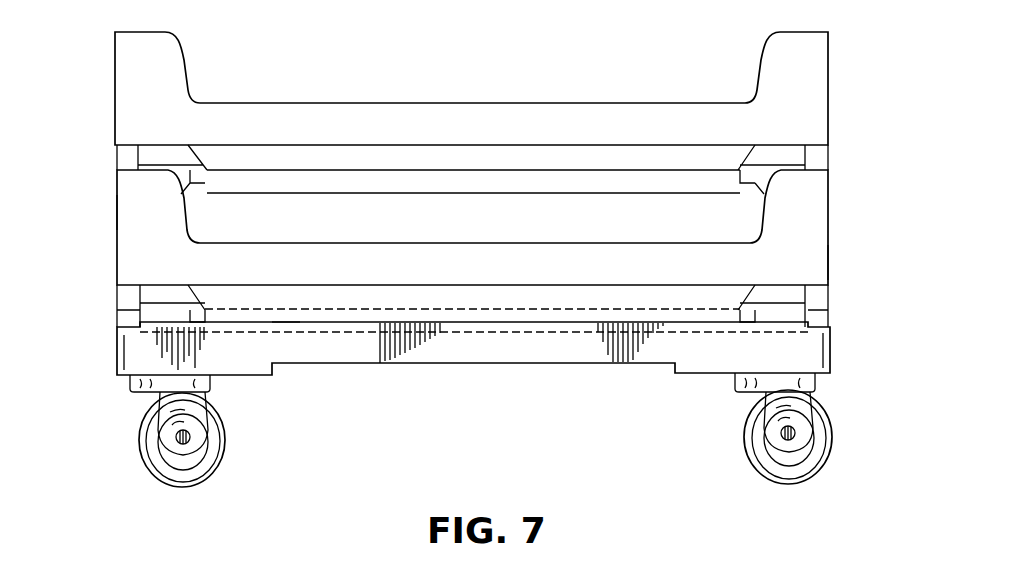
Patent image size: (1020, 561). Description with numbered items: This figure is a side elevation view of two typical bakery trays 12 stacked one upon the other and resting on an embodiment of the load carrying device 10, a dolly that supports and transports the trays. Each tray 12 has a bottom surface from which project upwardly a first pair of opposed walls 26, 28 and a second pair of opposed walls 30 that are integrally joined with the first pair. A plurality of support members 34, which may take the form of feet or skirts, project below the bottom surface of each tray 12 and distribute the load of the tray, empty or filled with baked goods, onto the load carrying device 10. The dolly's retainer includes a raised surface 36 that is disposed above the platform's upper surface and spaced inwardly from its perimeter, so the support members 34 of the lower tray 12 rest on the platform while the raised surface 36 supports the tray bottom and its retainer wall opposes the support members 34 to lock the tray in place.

The load carrying device 10 is at (473, 363).
The tray 12 is at (350, 105).
The first opposed wall 26 is at (118, 213).
The first opposed wall 28 is at (832, 263).
The second opposed wall 30 is at (493, 286).
The support member 34 is at (152, 315).
The raised surface 36 is at (279, 309).